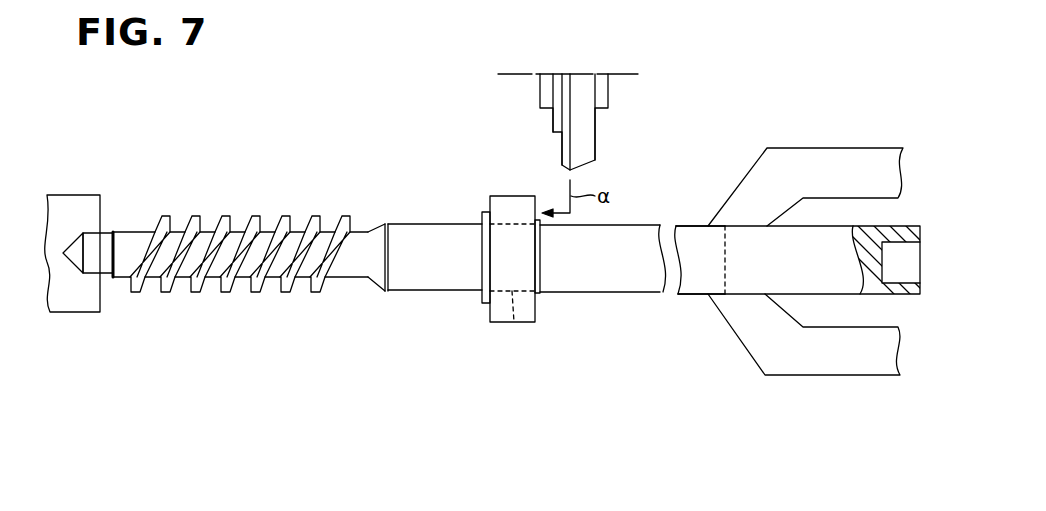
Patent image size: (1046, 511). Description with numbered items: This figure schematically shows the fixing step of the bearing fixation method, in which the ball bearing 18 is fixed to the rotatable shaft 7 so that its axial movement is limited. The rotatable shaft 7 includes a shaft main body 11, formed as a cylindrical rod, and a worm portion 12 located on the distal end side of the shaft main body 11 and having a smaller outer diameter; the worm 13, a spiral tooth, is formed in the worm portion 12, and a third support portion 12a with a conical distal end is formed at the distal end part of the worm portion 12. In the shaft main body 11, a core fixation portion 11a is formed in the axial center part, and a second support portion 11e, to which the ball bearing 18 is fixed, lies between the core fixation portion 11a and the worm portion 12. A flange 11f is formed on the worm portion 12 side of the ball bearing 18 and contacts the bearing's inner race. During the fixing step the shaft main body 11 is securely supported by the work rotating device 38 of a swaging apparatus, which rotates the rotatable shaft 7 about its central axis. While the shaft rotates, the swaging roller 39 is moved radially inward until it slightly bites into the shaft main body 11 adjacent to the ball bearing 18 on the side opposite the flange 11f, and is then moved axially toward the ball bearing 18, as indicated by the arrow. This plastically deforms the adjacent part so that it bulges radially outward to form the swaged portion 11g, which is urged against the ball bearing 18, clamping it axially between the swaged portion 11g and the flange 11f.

The work rotating device 38 is at (73, 195).
The third support portion 12a is at (105, 231).
The worm portion 12 is at (348, 279).
The worm 13 is at (226, 294).
The rotatable shaft 7 is at (424, 218).
The shaft main body 11 is at (433, 293).
The flange 11f is at (483, 252).
The ball bearing 18 is at (510, 196).
The swaged portion 11g is at (540, 258).
The second support portion 11e is at (514, 322).
The core fixation portion 11a is at (684, 226).
The swaging roller 39 is at (595, 130).